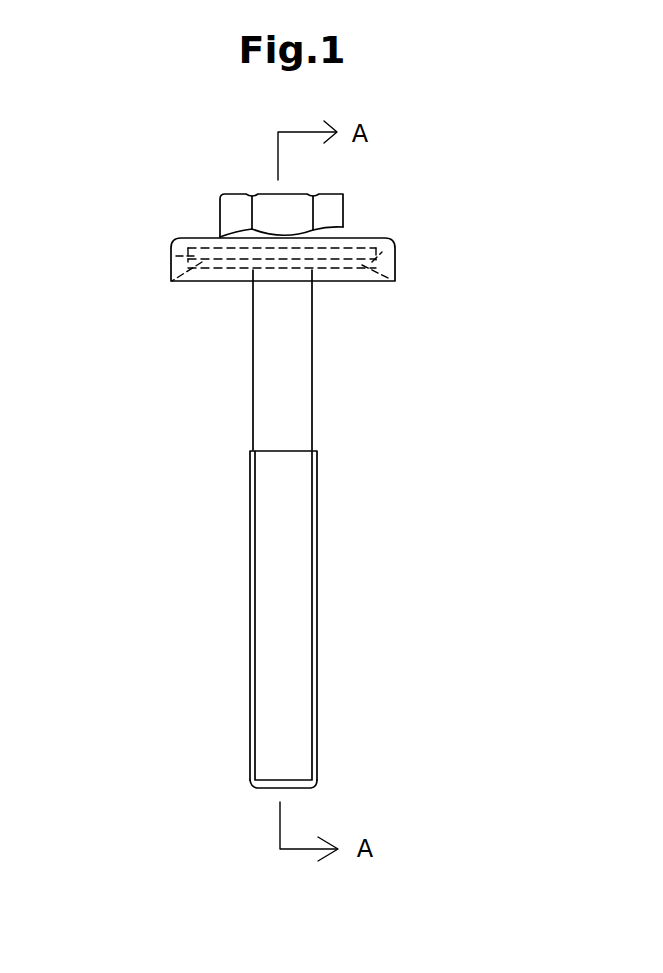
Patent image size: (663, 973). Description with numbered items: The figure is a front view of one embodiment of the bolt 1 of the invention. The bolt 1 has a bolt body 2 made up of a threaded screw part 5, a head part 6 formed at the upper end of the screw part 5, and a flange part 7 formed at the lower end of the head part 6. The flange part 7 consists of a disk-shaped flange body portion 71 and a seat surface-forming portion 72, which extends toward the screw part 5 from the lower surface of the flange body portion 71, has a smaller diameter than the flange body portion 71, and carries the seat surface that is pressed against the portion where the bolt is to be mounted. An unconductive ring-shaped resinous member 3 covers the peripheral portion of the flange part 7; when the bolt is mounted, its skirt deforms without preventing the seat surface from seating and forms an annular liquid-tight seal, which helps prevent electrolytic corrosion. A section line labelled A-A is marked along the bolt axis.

The bolt 1 is at (330, 496).
The bolt body 2 is at (299, 397).
The ring-shaped resinous member 3 is at (384, 262).
The screw part 5 is at (315, 627).
The head part 6 is at (300, 212).
The flange part 7 is at (235, 276).
The flange body portion 71 is at (172, 254).
The seat surface-forming portion 72 is at (345, 268).